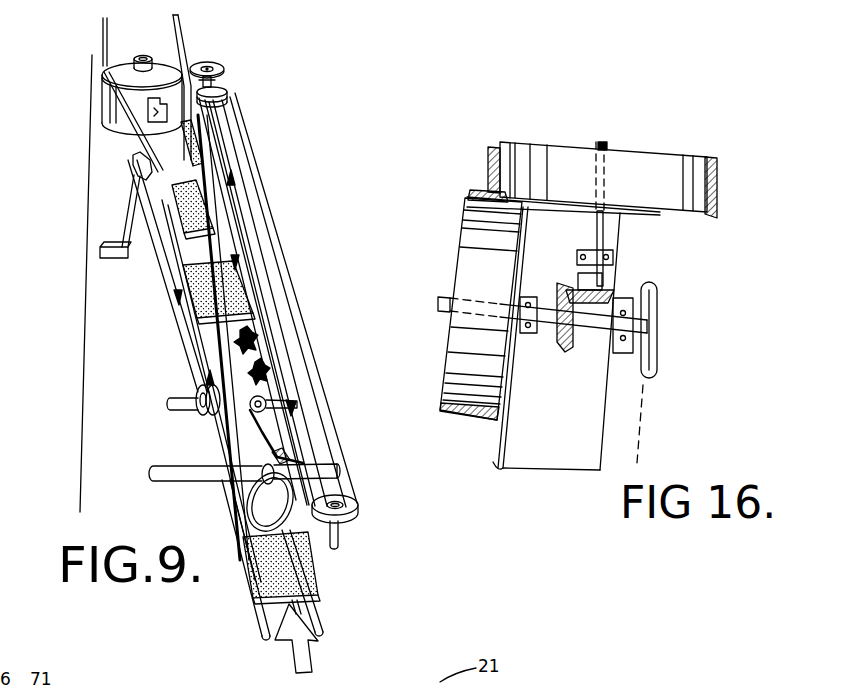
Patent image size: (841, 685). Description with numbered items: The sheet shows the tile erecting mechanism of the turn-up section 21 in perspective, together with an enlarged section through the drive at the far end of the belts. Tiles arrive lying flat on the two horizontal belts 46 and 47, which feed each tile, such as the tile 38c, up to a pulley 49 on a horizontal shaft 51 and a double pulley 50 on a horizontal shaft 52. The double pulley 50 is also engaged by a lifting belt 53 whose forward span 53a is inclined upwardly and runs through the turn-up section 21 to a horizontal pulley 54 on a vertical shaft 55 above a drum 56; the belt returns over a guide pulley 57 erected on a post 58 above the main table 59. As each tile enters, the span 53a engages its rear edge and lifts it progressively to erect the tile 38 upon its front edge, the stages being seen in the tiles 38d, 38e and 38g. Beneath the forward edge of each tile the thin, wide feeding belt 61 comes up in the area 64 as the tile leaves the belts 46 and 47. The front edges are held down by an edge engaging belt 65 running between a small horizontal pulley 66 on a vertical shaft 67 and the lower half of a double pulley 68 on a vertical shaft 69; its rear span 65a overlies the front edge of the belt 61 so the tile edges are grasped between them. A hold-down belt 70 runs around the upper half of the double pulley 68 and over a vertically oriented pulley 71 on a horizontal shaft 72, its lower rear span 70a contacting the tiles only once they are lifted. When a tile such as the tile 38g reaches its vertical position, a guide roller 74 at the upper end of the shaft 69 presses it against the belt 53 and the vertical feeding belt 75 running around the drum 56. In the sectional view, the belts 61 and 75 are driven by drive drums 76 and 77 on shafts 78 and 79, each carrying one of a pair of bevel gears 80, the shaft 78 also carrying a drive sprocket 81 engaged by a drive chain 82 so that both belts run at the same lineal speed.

In FIG. 9, the turn-up section 21 is at (328, 282).
In FIG. 9, the tile 38 is at (185, 138).
In FIG. 9, the tile 38c is at (317, 571).
In FIG. 9, the tile 38d is at (187, 283).
In FIG. 9, the tile 38e is at (190, 184).
In FIG. 9, the tile 38g is at (190, 66).
In FIG. 9, the belt 46 is at (327, 625).
In FIG. 9, the belt 47 is at (262, 637).
In FIG. 9, the pulley 49 is at (258, 410).
In FIG. 9, the double pulley 50 is at (204, 421).
In FIG. 9, the horizontal shaft 51 is at (290, 408).
In FIG. 9, the horizontal shaft 52 is at (186, 408).
In FIG. 9, the lifting belt 53 is at (178, 344).
In FIG. 9, the forward span 53a is at (200, 358).
In FIG. 9, the horizontal pulley 54 is at (103, 71).
In FIG. 9, the vertical shaft 55 is at (137, 57).
In FIG. 9, the drum 56 is at (153, 112).
In FIG. 9, the guide pulley 57 is at (136, 155).
In FIG. 9, the post 58 is at (130, 194).
In FIG. 9, the main table 59 is at (80, 320).
In FIG. 9, the belt 61 is at (246, 346).
In FIG. 16, the belt 61 is at (478, 195).
In FIG. 9, the area 64 is at (262, 369).
In FIG. 9, the edge engaging belt 65 is at (237, 138).
In FIG. 9, the rear span 65a is at (243, 251).
In FIG. 9, the small horizontal pulley 66 is at (357, 513).
In FIG. 9, the vertical shaft 67 is at (340, 543).
In FIG. 9, the double pulley 68 is at (231, 96).
In FIG. 9, the vertical shaft 69 is at (214, 86).
In FIG. 9, the hold-down belt 70 is at (252, 208).
In FIG. 9, the lower rear span 70a is at (236, 278).
In FIG. 9, the vertically oriented pulley 71 is at (243, 505).
In FIG. 9, the horizontal shaft 72 is at (187, 483).
In FIG. 9, the guide roller 74 is at (224, 69).
In FIG. 9, the vertical feeding belt 75 is at (179, 44).
In FIG. 16, the vertical feeding belt 75 is at (488, 158).
In FIG. 16, the drive drum 76 is at (463, 238).
In FIG. 16, the drive drum 77 is at (535, 142).
In FIG. 16, the shaft 78 is at (442, 310).
In FIG. 16, the shaft 79 is at (608, 144).
In FIG. 16, the bevel gears 80 is at (568, 288).
In FIG. 16, the drive sprocket 81 is at (652, 365).
In FIG. 16, the drive chain 82 is at (645, 405).